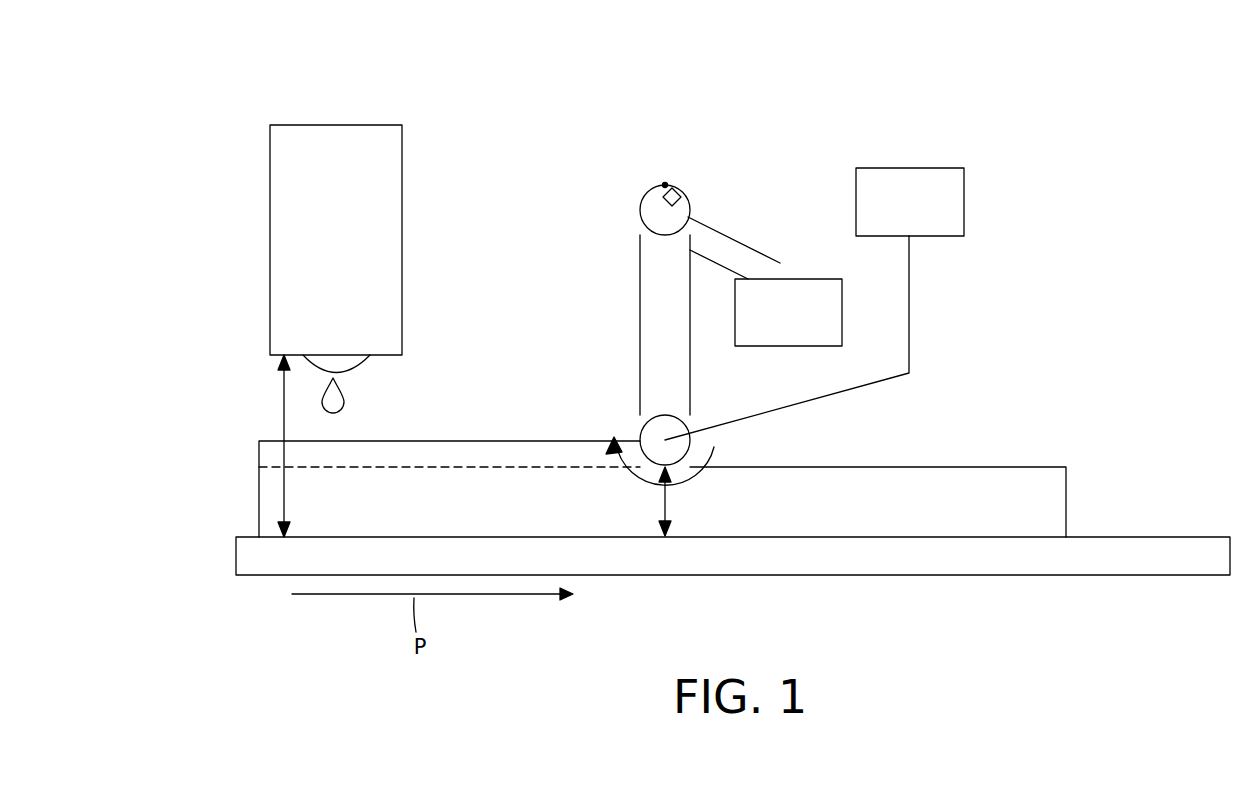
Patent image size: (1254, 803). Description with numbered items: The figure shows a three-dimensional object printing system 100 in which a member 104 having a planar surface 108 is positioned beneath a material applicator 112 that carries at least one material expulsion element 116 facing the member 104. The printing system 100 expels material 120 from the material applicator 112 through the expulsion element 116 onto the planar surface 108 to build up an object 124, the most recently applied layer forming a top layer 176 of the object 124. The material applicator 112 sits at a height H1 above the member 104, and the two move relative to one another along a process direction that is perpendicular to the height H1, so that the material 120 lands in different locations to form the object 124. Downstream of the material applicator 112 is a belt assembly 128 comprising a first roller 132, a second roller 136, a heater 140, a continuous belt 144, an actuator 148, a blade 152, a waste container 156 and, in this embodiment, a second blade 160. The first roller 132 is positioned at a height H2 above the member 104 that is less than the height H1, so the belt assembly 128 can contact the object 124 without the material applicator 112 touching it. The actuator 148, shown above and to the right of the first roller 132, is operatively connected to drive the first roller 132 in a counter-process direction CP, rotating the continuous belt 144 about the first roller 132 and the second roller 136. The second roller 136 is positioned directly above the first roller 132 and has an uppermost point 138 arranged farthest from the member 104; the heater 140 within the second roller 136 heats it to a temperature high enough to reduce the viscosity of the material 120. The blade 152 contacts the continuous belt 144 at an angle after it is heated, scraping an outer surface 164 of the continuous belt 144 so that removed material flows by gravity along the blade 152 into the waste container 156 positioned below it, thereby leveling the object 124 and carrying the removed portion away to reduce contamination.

The three-dimensional object printing system 100 is at (535, 76).
The member 104 is at (248, 565).
The planar surface 108 is at (247, 533).
The material applicator 112 is at (402, 250).
The material expulsion element 116 is at (370, 360).
The material 120 is at (345, 400).
The object 124 is at (490, 478).
The belt assembly 128 is at (840, 136).
The first roller 132 is at (651, 430).
The second roller 136 is at (650, 210).
The uppermost point 138 is at (665, 182).
The heater 140 is at (677, 191).
The continuous belt 144 is at (639, 322).
The actuator 148 is at (964, 200).
The blade 152 is at (730, 233).
The waste container 156 is at (808, 279).
The second blade 160 is at (717, 262).
The outer surface 164 is at (693, 228).
The top layer 176 is at (440, 452).
The counter-process direction CP is at (633, 481).
The height H1 is at (283, 405).
The height H2 is at (668, 501).